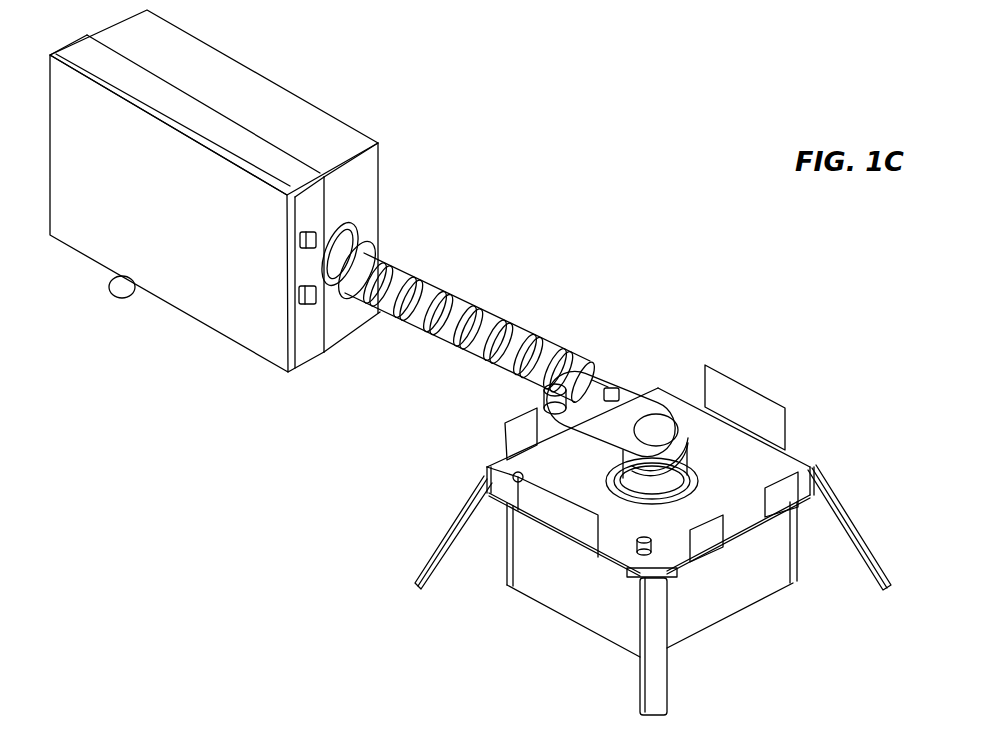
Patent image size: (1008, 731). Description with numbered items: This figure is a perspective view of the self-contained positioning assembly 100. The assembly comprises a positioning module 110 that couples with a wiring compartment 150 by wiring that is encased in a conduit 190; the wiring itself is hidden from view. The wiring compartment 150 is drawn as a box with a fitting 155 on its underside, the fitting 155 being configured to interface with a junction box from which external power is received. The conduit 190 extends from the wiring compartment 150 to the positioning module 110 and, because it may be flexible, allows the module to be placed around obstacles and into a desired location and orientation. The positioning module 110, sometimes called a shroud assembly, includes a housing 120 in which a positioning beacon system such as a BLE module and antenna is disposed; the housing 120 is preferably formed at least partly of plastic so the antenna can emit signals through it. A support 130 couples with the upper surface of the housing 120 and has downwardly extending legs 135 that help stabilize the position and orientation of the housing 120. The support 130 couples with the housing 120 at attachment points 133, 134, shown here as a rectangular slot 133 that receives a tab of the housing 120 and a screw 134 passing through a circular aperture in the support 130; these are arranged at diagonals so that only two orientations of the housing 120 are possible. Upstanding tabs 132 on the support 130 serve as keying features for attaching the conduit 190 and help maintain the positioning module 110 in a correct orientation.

The self-contained positioning assembly 100 is at (622, 72).
The positioning module 110 is at (650, 300).
The housing 120 is at (760, 585).
The support 130 is at (680, 393).
The tabs 132 is at (513, 412).
The attachment points 133 is at (640, 555).
The attachment points 134 is at (515, 482).
The legs 135 is at (845, 500).
The wiring compartment 150 is at (247, 88).
The fitting 155 is at (135, 298).
The conduit 190 is at (418, 272).